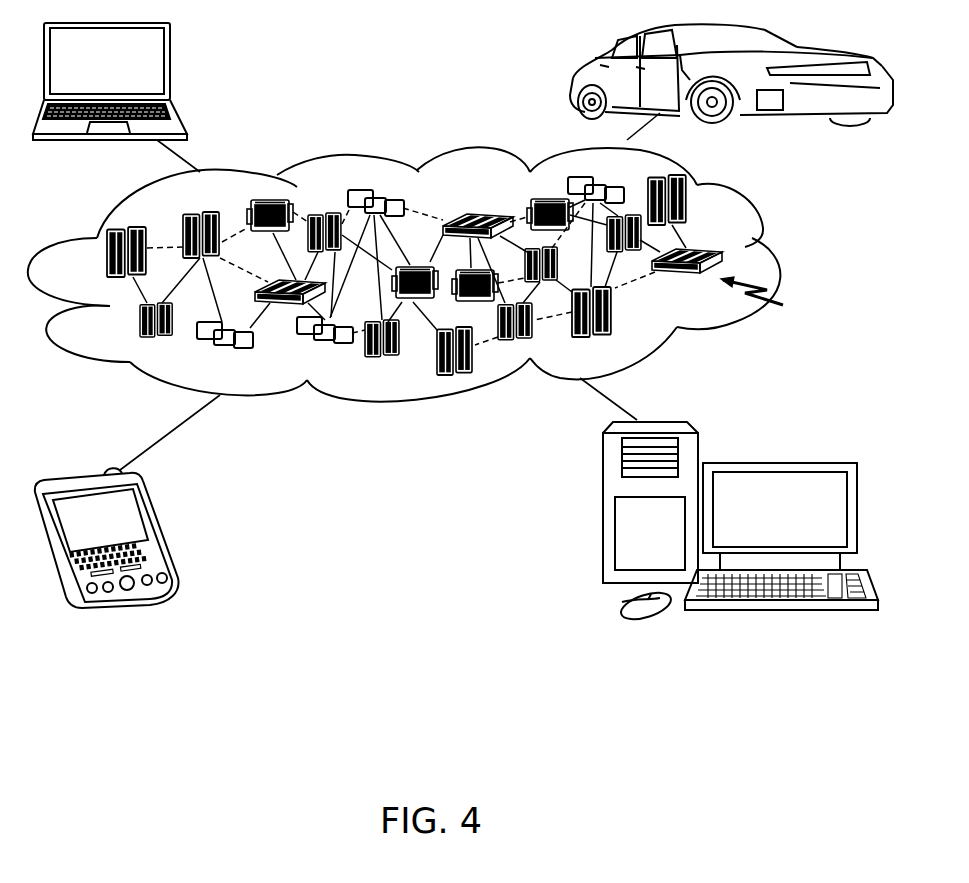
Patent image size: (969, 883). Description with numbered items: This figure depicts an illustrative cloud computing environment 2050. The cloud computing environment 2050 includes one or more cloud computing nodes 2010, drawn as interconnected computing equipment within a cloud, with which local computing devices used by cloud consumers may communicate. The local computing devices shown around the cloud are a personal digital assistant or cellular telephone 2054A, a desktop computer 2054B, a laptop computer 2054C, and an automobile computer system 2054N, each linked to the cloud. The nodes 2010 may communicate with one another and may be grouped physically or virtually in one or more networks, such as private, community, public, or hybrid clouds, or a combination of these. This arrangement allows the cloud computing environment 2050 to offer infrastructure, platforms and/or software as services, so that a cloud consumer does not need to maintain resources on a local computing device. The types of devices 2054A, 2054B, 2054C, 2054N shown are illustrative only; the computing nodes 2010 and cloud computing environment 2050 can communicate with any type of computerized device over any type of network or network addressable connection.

The cloud computing environment 2050 is at (782, 261).
The cloud computing nodes 2010 is at (779, 297).
The personal digital assistant or cellular telephone 2054A is at (160, 528).
The desktop computer 2054B is at (787, 447).
The laptop computer 2054C is at (176, 64).
The automobile computer system 2054N is at (575, 78).